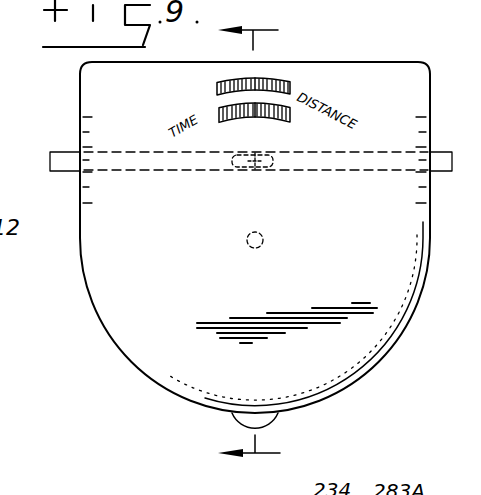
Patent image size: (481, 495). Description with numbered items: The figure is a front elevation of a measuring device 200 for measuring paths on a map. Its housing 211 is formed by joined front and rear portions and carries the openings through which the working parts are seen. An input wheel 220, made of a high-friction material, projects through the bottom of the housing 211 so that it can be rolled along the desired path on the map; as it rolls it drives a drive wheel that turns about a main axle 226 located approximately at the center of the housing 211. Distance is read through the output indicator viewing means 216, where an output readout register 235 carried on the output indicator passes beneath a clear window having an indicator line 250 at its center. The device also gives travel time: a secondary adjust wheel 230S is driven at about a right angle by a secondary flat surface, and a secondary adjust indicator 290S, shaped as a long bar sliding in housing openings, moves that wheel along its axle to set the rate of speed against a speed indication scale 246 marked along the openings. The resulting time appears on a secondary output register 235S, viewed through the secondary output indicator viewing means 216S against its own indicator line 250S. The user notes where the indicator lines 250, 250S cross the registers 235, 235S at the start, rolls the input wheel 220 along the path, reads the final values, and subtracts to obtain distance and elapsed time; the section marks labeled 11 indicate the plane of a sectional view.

The measuring device 200 is at (148, 393).
The housing 211 is at (380, 367).
The input wheel 220 is at (236, 420).
The secondary adjust indicator 290S is at (64, 152).
The secondary adjust wheel 230S is at (255, 168).
The main axle 226 is at (253, 248).
The speed indication scale 246 is at (92, 218).
The output indicator viewing means 216 is at (222, 85).
The output readout register 235 is at (237, 77).
The indicator line 250 is at (262, 78).
The secondary output indicator viewing means 216S is at (221, 108).
The secondary output register 235S is at (243, 117).
The indicator line 250S is at (265, 119).
The section line 11 is at (263, 244).